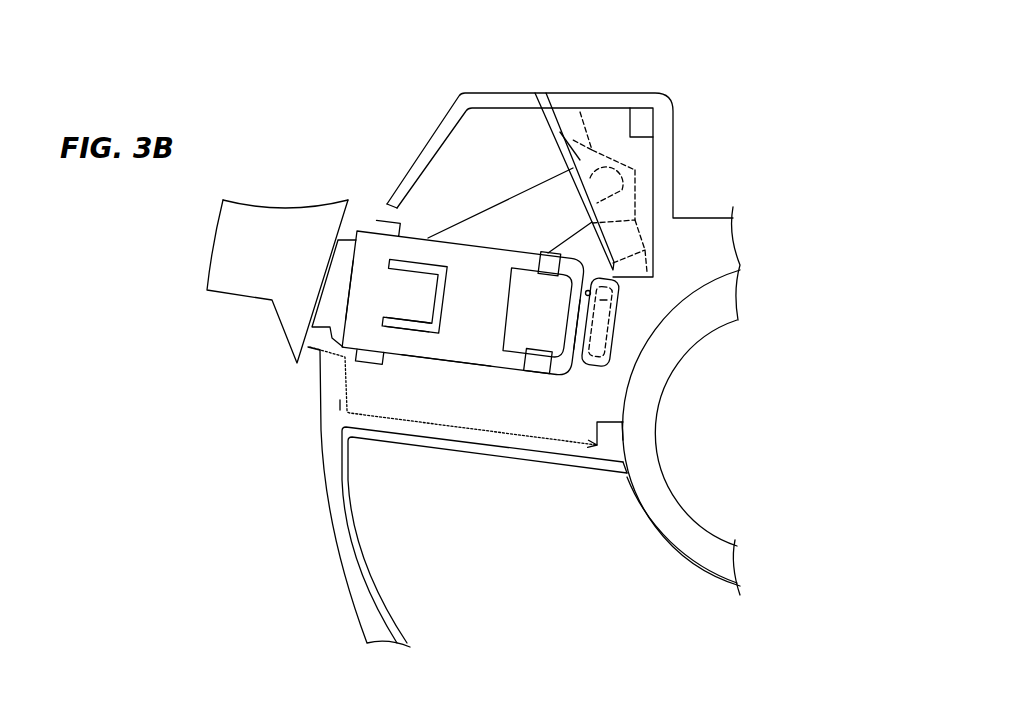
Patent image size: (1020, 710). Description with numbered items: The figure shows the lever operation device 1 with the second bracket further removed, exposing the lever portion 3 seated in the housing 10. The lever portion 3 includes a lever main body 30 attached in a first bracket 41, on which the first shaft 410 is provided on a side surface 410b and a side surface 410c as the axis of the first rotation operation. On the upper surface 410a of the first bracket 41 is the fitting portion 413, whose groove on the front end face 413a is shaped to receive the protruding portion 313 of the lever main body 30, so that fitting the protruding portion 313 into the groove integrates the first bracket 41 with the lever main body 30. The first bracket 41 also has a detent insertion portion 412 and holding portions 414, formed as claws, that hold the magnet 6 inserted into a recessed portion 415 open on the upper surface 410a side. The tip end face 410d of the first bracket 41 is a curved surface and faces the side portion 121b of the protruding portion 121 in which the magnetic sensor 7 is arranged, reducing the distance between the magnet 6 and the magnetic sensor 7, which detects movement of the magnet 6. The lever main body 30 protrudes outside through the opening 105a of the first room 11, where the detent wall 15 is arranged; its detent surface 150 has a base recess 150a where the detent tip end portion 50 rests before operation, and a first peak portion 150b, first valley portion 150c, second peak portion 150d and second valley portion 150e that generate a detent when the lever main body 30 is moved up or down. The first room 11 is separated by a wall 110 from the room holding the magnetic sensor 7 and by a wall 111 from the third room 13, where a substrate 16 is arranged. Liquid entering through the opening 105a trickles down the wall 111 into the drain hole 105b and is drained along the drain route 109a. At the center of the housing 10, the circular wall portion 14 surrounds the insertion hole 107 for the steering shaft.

The lever operation device 1 is at (783, 66).
The lever portion 3 is at (352, 153).
The lever main body 30 is at (295, 200).
The first bracket 41 is at (364, 214).
The detent tip end portion 50 is at (546, 198).
The detent insertion portion 412 is at (548, 200).
The detent wall 15 is at (642, 148).
The detent surface 150 is at (553, 165).
The base recess 150a is at (637, 173).
The first peak portion 150b is at (633, 220).
The first valley portion 150c is at (645, 250).
The second peak portion 150d is at (576, 150).
The second valley portion 150e is at (562, 140).
The first shaft 410 is at (371, 357).
The upper surface 410a is at (408, 243).
The side surface 410b is at (470, 244).
The side surface 410c is at (458, 362).
The tip end face 410d is at (612, 352).
The protruding portion 313 is at (440, 266).
The fitting portion 413 is at (415, 306).
The front end face 413a is at (417, 308).
The magnet 6 is at (515, 330).
The holding portions 414 is at (546, 262).
The recessed portion 415 is at (572, 360).
The protruding portion 121 is at (591, 292).
The side portion 121b is at (607, 315).
The magnetic sensor 7 is at (618, 298).
The opening 105a is at (335, 338).
The drain hole 105b is at (612, 436).
The drain route 109a is at (340, 392).
The first room 11 is at (337, 417).
The third room 13 is at (343, 470).
The substrate 16 is at (377, 498).
The housing 10 is at (325, 520).
The circular wall portion 14 is at (645, 397).
The wall 110 is at (612, 405).
The wall 111 is at (626, 466).
The insertion hole 107 is at (720, 532).